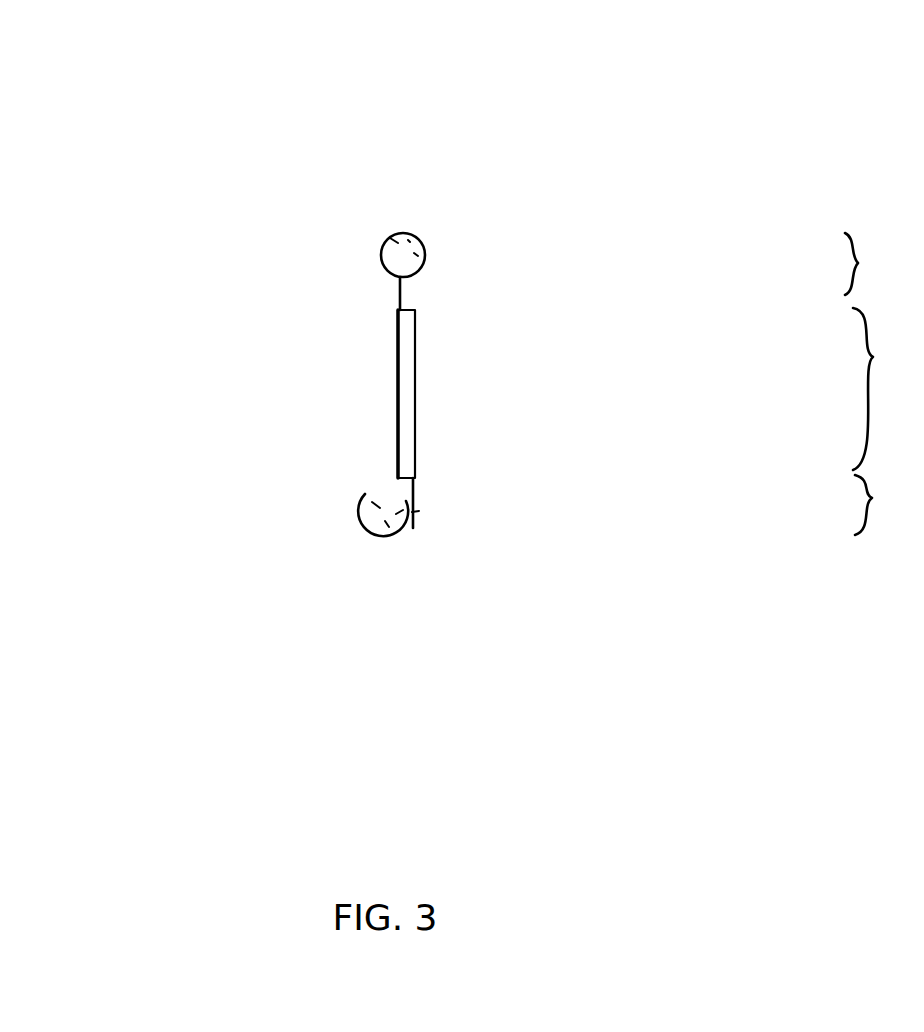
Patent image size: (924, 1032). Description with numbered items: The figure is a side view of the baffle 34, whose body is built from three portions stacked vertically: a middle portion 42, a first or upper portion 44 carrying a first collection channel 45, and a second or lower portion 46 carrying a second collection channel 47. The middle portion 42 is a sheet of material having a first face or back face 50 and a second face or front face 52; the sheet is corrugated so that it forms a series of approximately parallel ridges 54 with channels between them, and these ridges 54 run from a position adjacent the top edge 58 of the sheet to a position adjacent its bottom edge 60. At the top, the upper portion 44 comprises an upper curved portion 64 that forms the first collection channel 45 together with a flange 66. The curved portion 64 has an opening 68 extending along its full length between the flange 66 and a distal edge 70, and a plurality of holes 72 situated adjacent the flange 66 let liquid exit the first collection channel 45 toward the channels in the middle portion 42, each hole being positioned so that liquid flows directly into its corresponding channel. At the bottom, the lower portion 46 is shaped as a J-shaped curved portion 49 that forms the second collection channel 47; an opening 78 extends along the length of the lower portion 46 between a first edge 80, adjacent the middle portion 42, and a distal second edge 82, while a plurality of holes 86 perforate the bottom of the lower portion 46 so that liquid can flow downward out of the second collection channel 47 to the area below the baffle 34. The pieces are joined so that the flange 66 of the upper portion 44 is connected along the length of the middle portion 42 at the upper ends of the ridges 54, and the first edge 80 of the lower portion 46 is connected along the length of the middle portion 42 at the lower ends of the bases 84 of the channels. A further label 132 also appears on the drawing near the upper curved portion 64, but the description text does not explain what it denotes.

The closure device 34 is at (163, 113).
The proximal end portion 44 is at (872, 264).
The shaft portion 42 is at (885, 389).
The distal end portion 46 is at (883, 505).
The proximal head 45 is at (392, 252).
The distal head 47 is at (385, 540).
The distal surface 49 is at (363, 520).
The first side surface 50 is at (418, 398).
The second side surface 52 is at (398, 366).
The lower edge 54 is at (398, 465).
The upper edge 58 is at (370, 292).
The shoulder 60 is at (398, 481).
The top surface 64 is at (410, 240).
The right neck surface 66 is at (418, 300).
The right head surface 68 is at (420, 283).
The right head edge 70 is at (430, 263).
The left head surface 72 is at (392, 290).
The lower left shoulder 78 is at (358, 489).
The lower right shoulder 80 is at (415, 483).
The distal neck 82 is at (358, 492).
The side notch 84 is at (416, 457).
The distal bottom surface 86 is at (384, 545).
The head curvature 132 is at (392, 282).